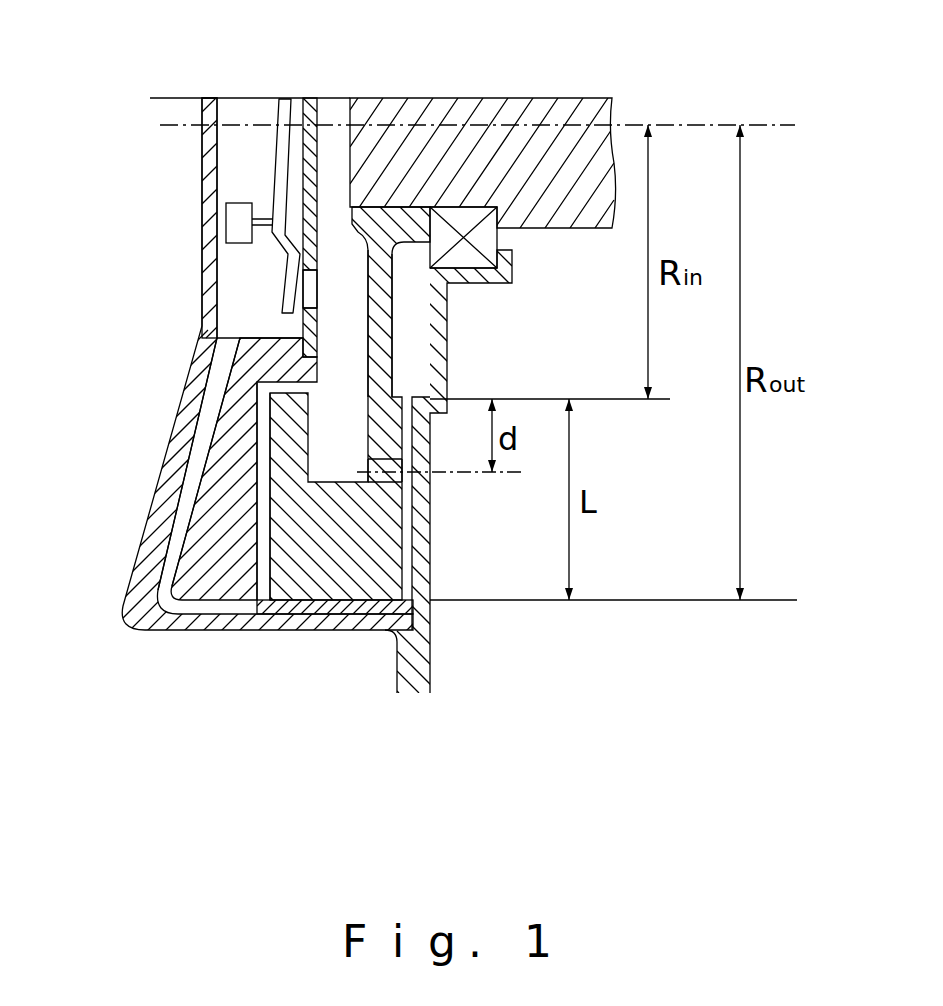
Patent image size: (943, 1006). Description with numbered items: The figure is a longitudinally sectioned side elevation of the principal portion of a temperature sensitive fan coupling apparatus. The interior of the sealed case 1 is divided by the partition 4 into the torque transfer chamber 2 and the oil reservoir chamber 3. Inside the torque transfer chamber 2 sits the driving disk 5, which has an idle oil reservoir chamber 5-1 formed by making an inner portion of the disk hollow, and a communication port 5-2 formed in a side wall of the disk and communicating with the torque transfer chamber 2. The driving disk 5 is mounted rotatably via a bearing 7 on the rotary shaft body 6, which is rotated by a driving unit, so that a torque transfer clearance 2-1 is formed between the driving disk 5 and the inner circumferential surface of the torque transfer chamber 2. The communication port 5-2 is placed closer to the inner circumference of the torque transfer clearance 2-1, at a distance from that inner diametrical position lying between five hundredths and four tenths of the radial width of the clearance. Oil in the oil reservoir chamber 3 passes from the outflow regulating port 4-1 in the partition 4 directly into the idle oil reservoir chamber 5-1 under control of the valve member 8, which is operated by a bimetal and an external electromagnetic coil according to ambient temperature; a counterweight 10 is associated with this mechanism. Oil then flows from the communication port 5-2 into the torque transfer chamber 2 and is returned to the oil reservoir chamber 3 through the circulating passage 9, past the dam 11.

The sealed case 1 is at (163, 503).
The torque transfer chamber 2 is at (430, 577).
The torque transfer clearance 2-1 is at (264, 566).
The oil reservoir chamber 3 is at (245, 154).
The partition 4 is at (312, 97).
The outflow regulating port 4-1 is at (303, 291).
The driving disk 5 is at (362, 580).
The idle oil reservoir chamber 5-1 is at (328, 413).
The communication port 5-2 is at (388, 477).
The rotary shaft body 6 is at (473, 115).
The bearing 7 is at (487, 237).
The valve member 8 is at (279, 104).
The circulating passage 9 is at (217, 407).
The counterweight 10 is at (226, 222).
The dam 11 is at (309, 613).